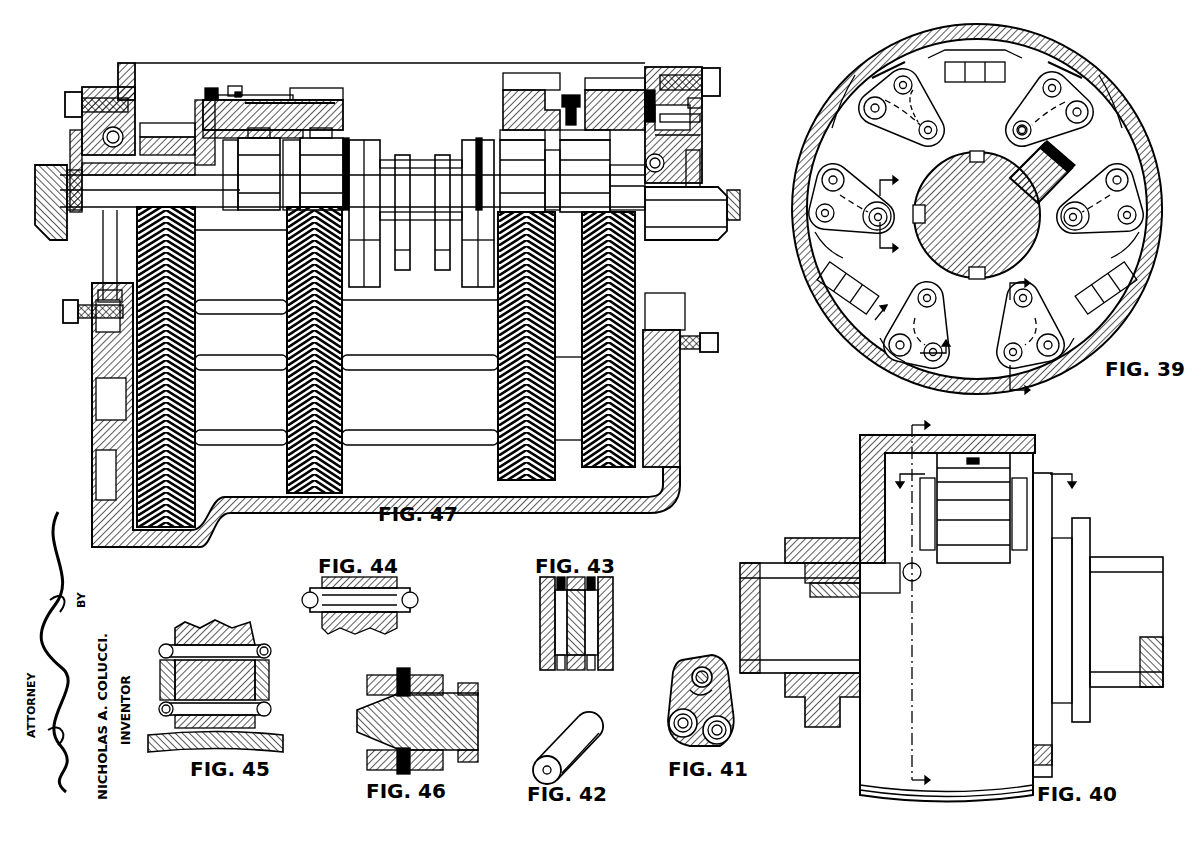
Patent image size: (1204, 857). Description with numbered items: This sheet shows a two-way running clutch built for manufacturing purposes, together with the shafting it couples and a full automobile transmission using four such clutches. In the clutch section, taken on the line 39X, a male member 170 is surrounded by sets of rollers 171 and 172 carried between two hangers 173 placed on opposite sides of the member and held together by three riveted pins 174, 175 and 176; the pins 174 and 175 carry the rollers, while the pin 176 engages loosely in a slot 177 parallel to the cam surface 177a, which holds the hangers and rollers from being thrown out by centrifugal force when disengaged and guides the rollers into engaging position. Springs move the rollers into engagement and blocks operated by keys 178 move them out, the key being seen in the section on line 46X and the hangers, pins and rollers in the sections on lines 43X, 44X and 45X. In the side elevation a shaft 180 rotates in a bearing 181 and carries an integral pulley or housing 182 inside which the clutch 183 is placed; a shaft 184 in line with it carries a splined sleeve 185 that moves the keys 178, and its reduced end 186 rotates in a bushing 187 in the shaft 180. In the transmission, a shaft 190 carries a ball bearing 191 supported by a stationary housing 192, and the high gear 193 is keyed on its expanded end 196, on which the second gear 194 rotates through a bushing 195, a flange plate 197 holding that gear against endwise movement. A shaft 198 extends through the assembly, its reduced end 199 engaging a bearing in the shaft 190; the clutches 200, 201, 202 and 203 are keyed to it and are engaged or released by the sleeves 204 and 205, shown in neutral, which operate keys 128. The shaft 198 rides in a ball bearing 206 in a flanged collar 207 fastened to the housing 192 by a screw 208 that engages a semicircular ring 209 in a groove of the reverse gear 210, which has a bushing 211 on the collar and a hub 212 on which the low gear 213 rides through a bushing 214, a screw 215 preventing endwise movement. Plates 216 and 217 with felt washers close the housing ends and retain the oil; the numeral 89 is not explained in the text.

In FIG. 39, the spring clip 89 is at (920, 65).
In FIG. 46, the spring clip 89 is at (407, 670).
In FIG. 47, the keys 128 is at (366, 140).
In FIG. 39, the male member 170 is at (1110, 132).
In FIG. 45, the male member 170 is at (230, 626).
In FIG. 44, the male member 170 is at (382, 634).
In FIG. 46, the male member 170 is at (405, 722).
In FIG. 41, the male member 170 is at (702, 660).
In FIG. 39, the roller 171 is at (862, 100).
In FIG. 45, the roller 171 is at (198, 728).
In FIG. 43, the roller 171 is at (612, 620).
In FIG. 41, the roller 171 is at (730, 736).
In FIG. 39, the roller 172 is at (895, 80).
In FIG. 43, the roller 172 is at (541, 600).
In FIG. 42, the roller 172 is at (590, 732).
In FIG. 41, the roller 172 is at (672, 730).
In FIG. 47, the hanger 173 is at (346, 138).
In FIG. 39, the hanger 173 is at (915, 132).
In FIG. 40, the hanger 173 is at (924, 510).
In FIG. 45, the hanger 173 is at (165, 642).
In FIG. 44, the hanger 173 is at (540, 582).
In FIG. 43, the hanger 173 is at (610, 660).
In FIG. 39, the pin 174 is at (870, 118).
In FIG. 45, the pin 174 is at (163, 716).
In FIG. 43, the pin 174 is at (592, 600).
In FIG. 41, the pin 174 is at (730, 722).
In FIG. 39, the pin 175 is at (915, 82).
In FIG. 43, the pin 175 is at (560, 623).
In FIG. 41, the pin 175 is at (678, 718).
In FIG. 39, the pin 176 is at (1012, 132).
In FIG. 45, the pin 176 is at (272, 652).
In FIG. 41, the pin 176 is at (692, 677).
In FIG. 39, the slot 177 is at (950, 116).
In FIG. 39, the cam surface 177a is at (1082, 226).
In FIG. 45, the cam surface 177a is at (250, 690).
In FIG. 41, the cam surface 177a is at (688, 697).
In FIG. 39, the key 178 is at (1112, 285).
In FIG. 40, the key 178 is at (1045, 712).
In FIG. 46, the key 178 is at (365, 715).
In FIG. 40, the shaft 180 is at (775, 563).
In FIG. 40, the bearing 181 is at (820, 538).
In FIG. 39, the pulley or housing 182 is at (875, 360).
In FIG. 40, the pulley or housing 182 is at (1028, 446).
In FIG. 45, the pulley or housing 182 is at (283, 745).
In FIG. 39, the clutch 183 is at (980, 377).
In FIG. 40, the clutch 183 is at (957, 548).
In FIG. 40, the shaft 184 is at (1140, 690).
In FIG. 40, the sleeve 185 is at (1090, 700).
In FIG. 46, the sleeve 185 is at (480, 690).
In FIG. 40, the reduced end 186 is at (845, 600).
In FIG. 40, the bushing 187 is at (878, 595).
In FIG. 47, the shaft 190 is at (55, 240).
In FIG. 47, the ball bearing 191 is at (78, 135).
In FIG. 47, the stationary housing 192 is at (126, 63).
In FIG. 47, the high gear 193 is at (147, 123).
In FIG. 47, the second gear 194 is at (340, 95).
In FIG. 47, the bushing 195 is at (275, 108).
In FIG. 47, the expanded end 196 is at (243, 100).
In FIG. 47, the flange plate 197 is at (208, 90).
In FIG. 47, the shaft 198 is at (706, 242).
In FIG. 47, the reduced end 199 is at (135, 200).
In FIG. 47, the clutch 200 is at (262, 190).
In FIG. 47, the clutch 201 is at (303, 186).
In FIG. 47, the clutch 202 is at (522, 171).
In FIG. 47, the clutch 203 is at (612, 196).
In FIG. 47, the sleeve 204 is at (402, 270).
In FIG. 47, the sleeve 205 is at (442, 270).
In FIG. 47, the ball bearing 206 is at (700, 170).
In FIG. 47, the flanged collar 207 is at (700, 136).
In FIG. 47, the screw 208 is at (702, 101).
In FIG. 47, the semicircular ring 209 is at (650, 90).
In FIG. 47, the reverse gear 210 is at (600, 78).
In FIG. 47, the bushing 211 is at (700, 118).
In FIG. 47, the hub 212 is at (577, 171).
In FIG. 47, the low gear 213 is at (508, 78).
In FIG. 47, the bushing 214 is at (568, 95).
In FIG. 47, the screw 215 is at (573, 107).
In FIG. 47, the plate 216 is at (88, 90).
In FIG. 47, the plate 217 is at (700, 153).
In FIG. 40, the section line 39X is at (937, 602).
In FIG. 39, the section line 43X is at (923, 323).
In FIG. 39, the section line 44X is at (890, 221).
In FIG. 39, the section line 45X is at (1039, 331).
In FIG. 40, the section line 46X is at (985, 490).